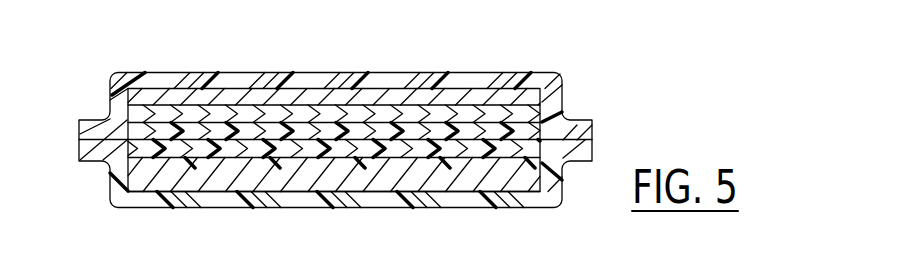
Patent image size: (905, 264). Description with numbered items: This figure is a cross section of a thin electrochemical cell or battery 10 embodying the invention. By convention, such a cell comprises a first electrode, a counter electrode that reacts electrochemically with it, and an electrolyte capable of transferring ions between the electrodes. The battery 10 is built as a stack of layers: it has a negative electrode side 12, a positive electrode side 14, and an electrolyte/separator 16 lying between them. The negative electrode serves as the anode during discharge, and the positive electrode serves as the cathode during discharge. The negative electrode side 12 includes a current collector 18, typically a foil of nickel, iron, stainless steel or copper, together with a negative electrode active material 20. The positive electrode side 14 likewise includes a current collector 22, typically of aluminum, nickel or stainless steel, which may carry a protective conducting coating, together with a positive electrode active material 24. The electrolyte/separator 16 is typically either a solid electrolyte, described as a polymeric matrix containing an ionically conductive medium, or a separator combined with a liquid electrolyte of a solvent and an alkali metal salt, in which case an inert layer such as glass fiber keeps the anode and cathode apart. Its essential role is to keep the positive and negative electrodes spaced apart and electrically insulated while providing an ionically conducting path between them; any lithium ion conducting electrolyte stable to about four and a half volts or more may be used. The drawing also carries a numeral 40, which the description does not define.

The laminated assembly 10 is at (592, 59).
The laminate stack 12 is at (333, 88).
The base layer 14 is at (297, 192).
The encapsulating shell 16 is at (517, 128).
The top layer 18 is at (408, 92).
The second layer 20 is at (133, 115).
The bottom layer 22 is at (133, 190).
The fourth layer 24 is at (520, 150).
The outer layer 40 is at (507, 202).